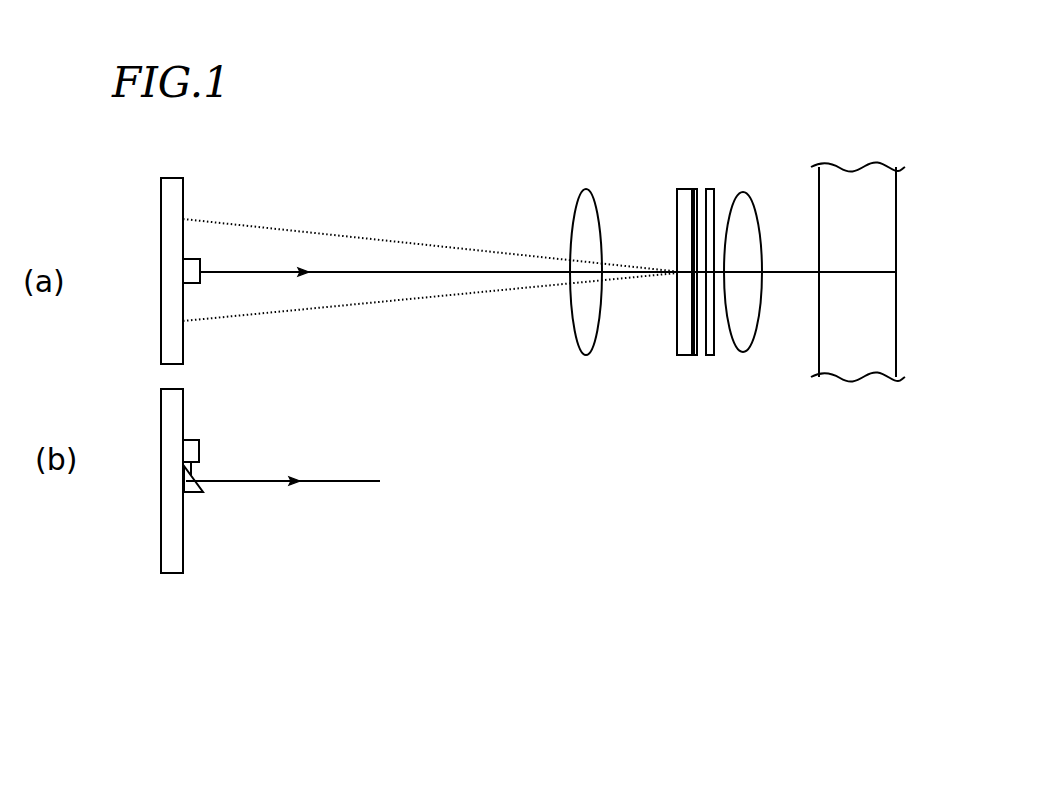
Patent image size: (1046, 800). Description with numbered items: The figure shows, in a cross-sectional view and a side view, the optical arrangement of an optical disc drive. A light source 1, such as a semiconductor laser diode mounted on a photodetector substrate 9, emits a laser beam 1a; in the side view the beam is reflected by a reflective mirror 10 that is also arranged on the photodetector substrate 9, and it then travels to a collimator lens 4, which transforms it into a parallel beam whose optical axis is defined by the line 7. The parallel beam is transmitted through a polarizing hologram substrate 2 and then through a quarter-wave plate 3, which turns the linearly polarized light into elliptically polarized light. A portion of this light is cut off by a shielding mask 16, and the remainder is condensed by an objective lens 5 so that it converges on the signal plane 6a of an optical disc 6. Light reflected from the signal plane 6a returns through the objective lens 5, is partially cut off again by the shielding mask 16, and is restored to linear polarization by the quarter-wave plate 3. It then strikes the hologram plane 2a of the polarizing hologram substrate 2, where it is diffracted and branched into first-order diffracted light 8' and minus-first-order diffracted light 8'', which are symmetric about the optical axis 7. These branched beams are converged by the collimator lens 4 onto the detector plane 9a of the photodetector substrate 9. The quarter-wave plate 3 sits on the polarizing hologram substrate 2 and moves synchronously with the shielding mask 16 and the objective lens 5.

The light source 1 is at (190, 267).
The laser beam 1a is at (267, 275).
The polarizing hologram substrate 2 is at (682, 345).
The hologram plane 2a is at (677, 327).
The quarter-wave plate 3 is at (695, 353).
The collimator lens 4 is at (573, 342).
The objective lens 5 is at (745, 342).
The optical disc 6 is at (842, 368).
The signal plane 6a is at (892, 225).
The optical axis 7 is at (485, 274).
The first-order diffracted light 8' is at (430, 230).
The −first-order diffracted light 8'' is at (430, 319).
The photodetector substrate 9 is at (170, 257).
The detector plane 9a is at (188, 198).
The reflective mirror 10 is at (185, 493).
The shielding mask 16 is at (712, 192).